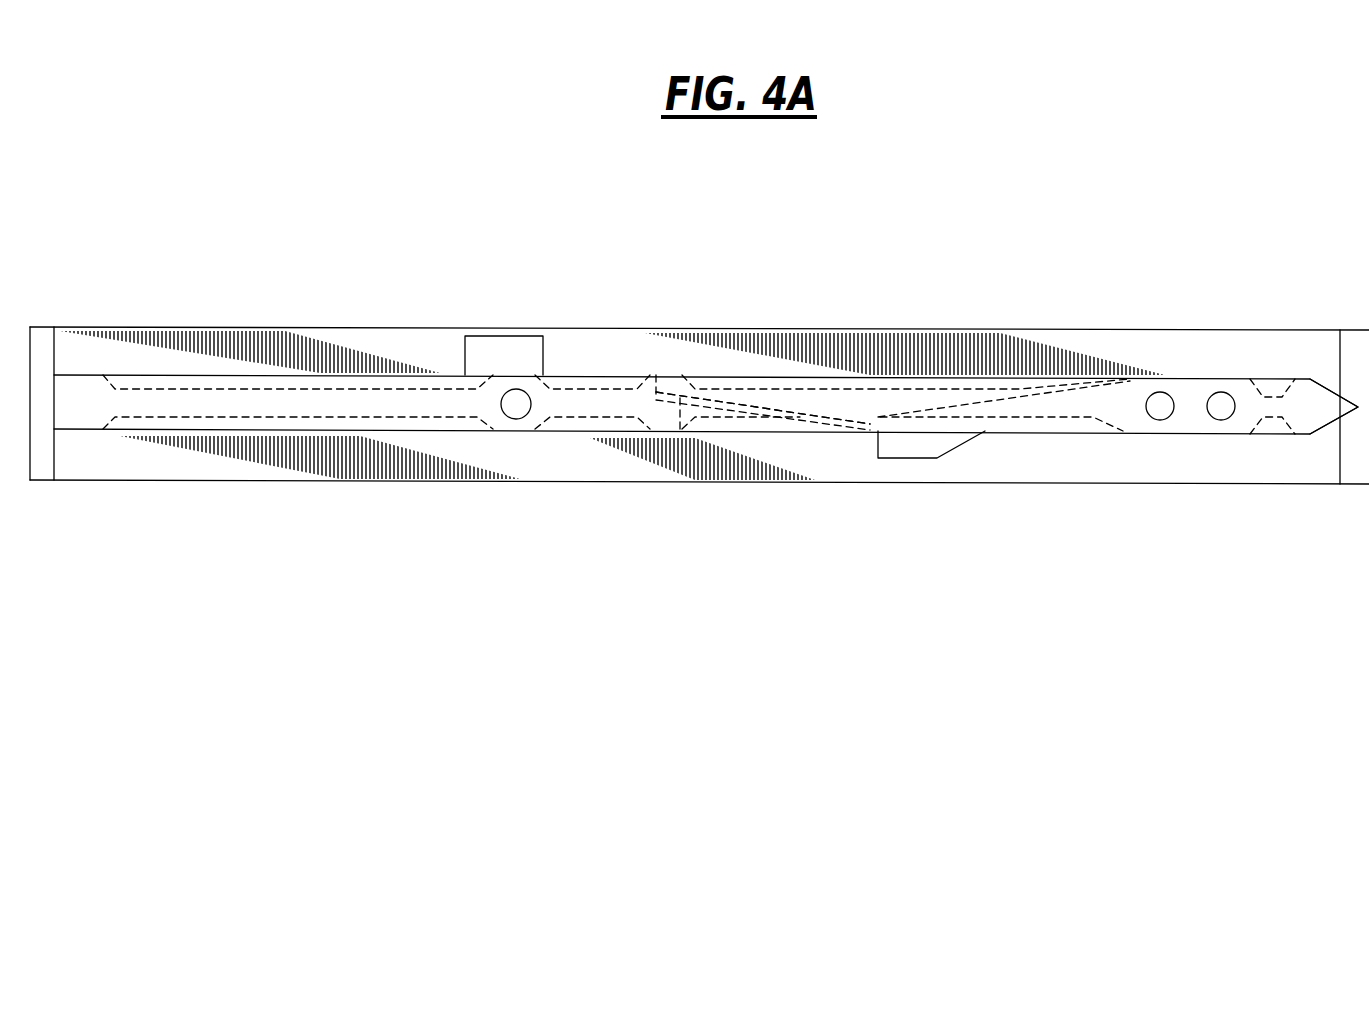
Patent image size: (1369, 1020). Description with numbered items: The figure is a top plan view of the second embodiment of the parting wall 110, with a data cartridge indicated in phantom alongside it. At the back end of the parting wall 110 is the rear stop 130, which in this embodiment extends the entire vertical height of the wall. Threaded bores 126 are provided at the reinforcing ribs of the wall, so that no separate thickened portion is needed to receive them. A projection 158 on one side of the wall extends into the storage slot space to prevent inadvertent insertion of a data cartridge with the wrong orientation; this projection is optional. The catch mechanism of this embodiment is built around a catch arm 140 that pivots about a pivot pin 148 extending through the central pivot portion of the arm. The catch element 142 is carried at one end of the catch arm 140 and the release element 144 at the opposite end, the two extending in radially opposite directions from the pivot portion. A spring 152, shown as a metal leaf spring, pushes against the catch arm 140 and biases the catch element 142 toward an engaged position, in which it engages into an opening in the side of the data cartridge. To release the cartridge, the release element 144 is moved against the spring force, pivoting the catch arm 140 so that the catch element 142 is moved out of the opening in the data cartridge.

The parting wall 110 is at (223, 533).
The threaded bores 126 is at (516, 404).
The rear stop 130 is at (45, 452).
The catch arm 140 is at (1190, 379).
The catch element 142 is at (917, 458).
The release element 144 is at (1332, 420).
The pivot pin 148 is at (1155, 406).
The spring 152 is at (838, 421).
The projection 158 is at (492, 356).